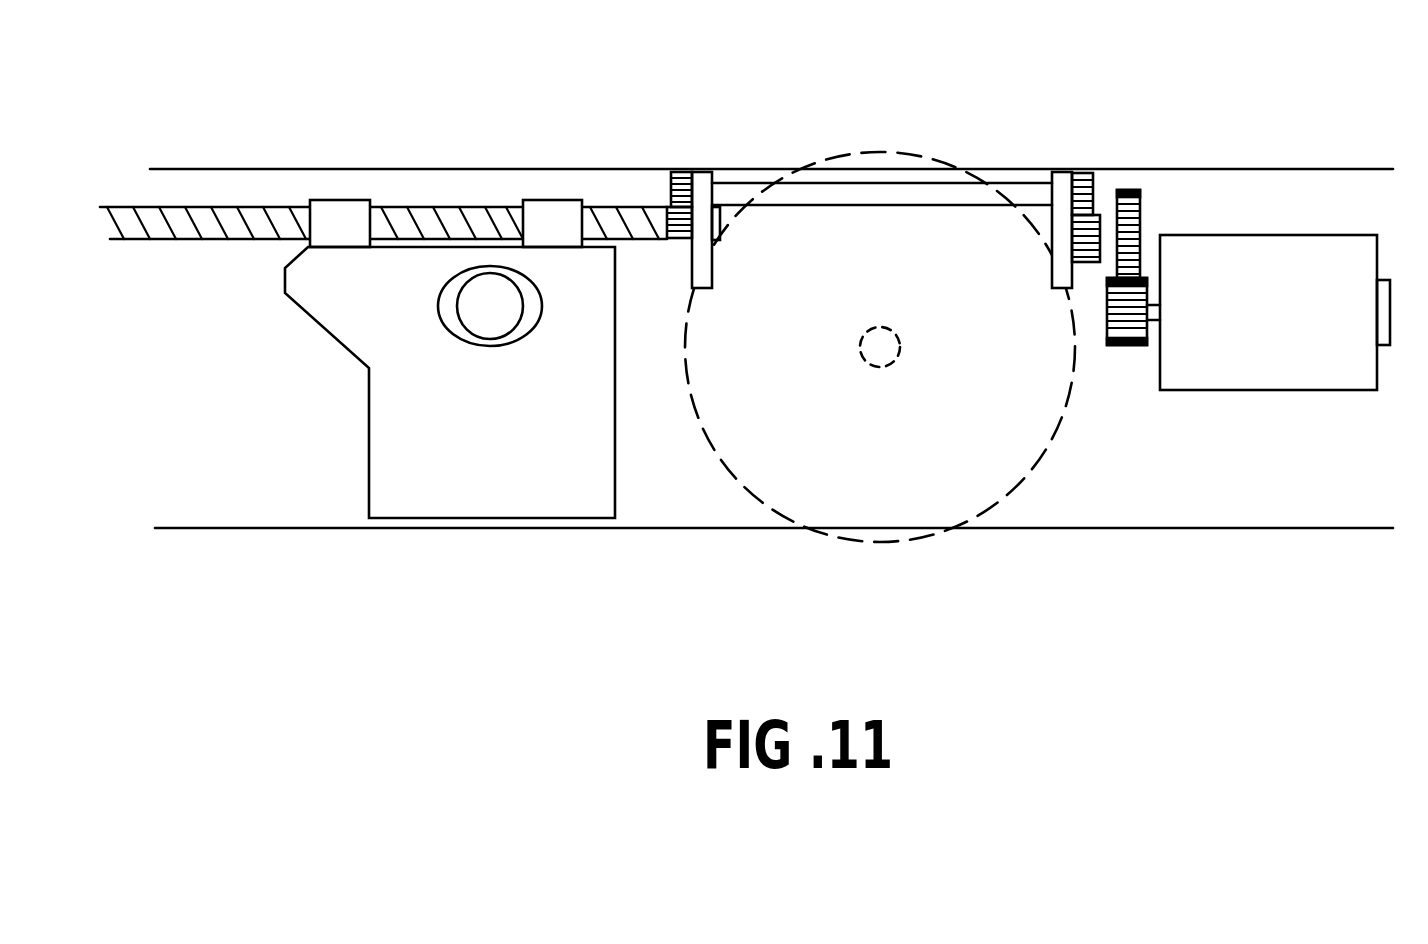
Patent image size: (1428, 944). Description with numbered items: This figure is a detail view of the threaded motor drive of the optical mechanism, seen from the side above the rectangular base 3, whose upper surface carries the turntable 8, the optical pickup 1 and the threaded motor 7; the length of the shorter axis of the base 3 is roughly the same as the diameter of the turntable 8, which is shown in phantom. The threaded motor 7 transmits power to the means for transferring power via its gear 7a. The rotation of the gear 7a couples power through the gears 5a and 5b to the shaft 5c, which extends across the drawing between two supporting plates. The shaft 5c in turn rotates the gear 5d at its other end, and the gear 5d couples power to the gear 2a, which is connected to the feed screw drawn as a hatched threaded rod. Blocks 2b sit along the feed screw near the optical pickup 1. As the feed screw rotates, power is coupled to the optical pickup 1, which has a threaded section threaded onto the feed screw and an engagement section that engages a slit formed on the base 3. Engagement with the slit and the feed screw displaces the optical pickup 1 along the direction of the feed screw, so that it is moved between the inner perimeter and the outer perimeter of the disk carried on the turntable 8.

The optical pickup 1 is at (452, 500).
The gear 2a is at (662, 216).
The guide blocks 2b is at (268, 215).
The base 3 is at (1232, 530).
The gear 5a is at (1140, 205).
The gear 5b is at (1095, 190).
The shaft 5c is at (863, 195).
The gear 5d is at (676, 184).
The threaded motor 7 is at (1258, 380).
The gear 7a is at (1112, 348).
The turntable 8 is at (1012, 485).